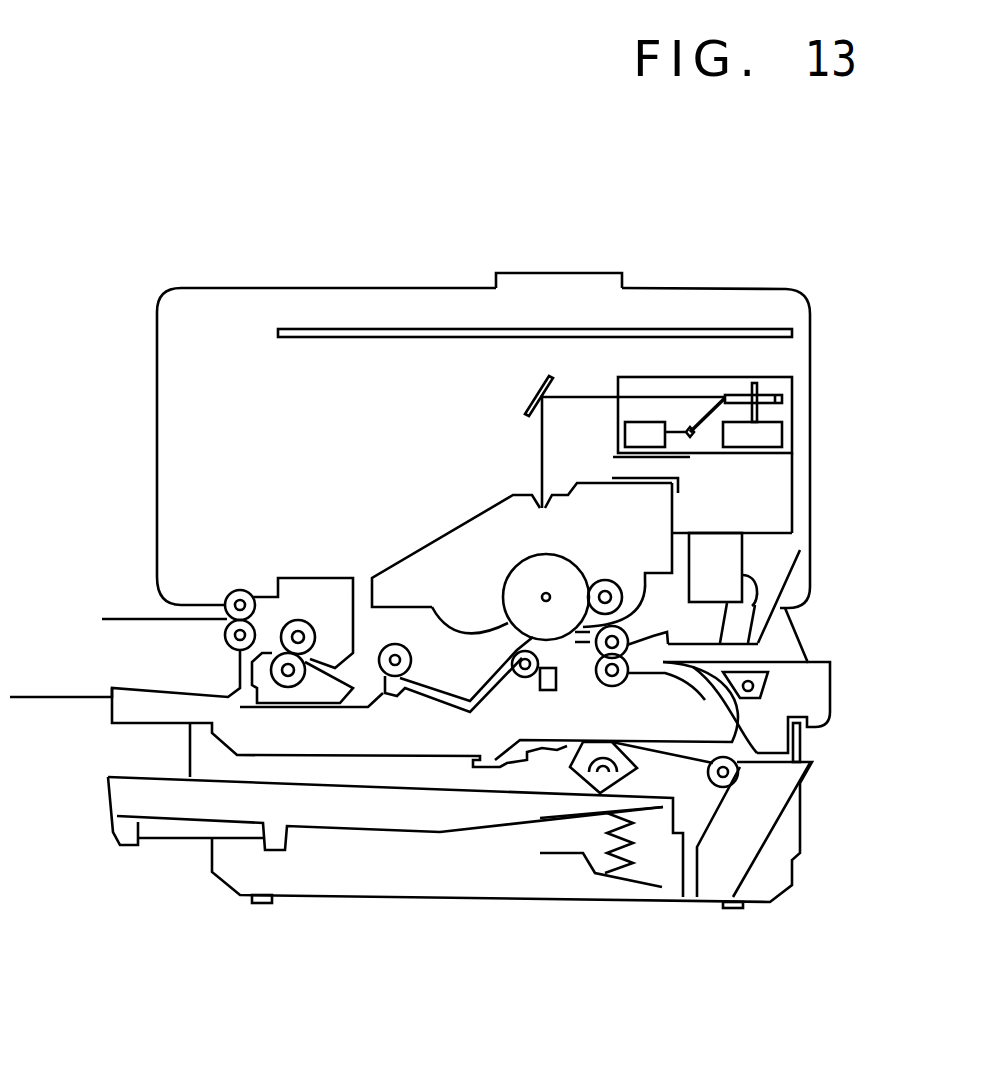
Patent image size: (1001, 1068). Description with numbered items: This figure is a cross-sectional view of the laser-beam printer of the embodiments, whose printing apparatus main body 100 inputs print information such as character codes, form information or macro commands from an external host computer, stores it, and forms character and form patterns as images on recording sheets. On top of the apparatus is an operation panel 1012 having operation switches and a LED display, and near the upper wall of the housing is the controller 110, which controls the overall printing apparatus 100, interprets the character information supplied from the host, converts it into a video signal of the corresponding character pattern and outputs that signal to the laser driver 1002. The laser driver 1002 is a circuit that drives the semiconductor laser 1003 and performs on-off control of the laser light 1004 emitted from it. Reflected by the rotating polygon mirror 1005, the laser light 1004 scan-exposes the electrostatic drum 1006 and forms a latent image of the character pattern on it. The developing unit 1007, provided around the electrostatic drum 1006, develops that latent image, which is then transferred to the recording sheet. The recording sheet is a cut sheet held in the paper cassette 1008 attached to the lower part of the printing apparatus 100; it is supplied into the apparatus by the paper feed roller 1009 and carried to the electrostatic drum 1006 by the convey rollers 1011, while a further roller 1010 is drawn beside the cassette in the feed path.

The printing apparatus main body 100 is at (698, 288).
The controller 110 is at (772, 330).
The operation panel 1012 is at (542, 278).
The laser light 1004 is at (660, 397).
The rotating polygon mirror 1005 is at (782, 398).
The semiconductor laser 1003 is at (690, 445).
The laser driver 1002 is at (618, 437).
The developing unit 1007 is at (415, 562).
The electrostatic drum 1006 is at (512, 574).
The convey roller 1011 is at (610, 690).
The feed roller 1010 is at (738, 778).
The paper feed roller 1009 is at (588, 745).
The paper cassette 1008 is at (108, 827).